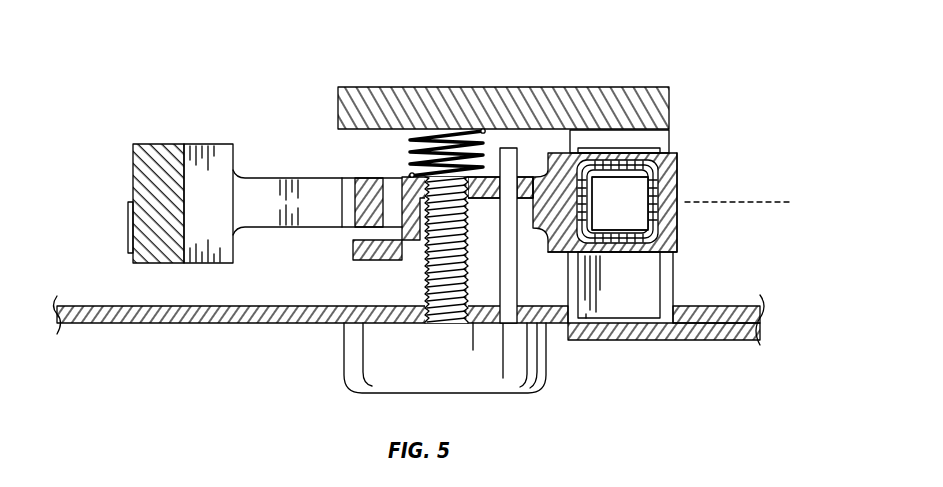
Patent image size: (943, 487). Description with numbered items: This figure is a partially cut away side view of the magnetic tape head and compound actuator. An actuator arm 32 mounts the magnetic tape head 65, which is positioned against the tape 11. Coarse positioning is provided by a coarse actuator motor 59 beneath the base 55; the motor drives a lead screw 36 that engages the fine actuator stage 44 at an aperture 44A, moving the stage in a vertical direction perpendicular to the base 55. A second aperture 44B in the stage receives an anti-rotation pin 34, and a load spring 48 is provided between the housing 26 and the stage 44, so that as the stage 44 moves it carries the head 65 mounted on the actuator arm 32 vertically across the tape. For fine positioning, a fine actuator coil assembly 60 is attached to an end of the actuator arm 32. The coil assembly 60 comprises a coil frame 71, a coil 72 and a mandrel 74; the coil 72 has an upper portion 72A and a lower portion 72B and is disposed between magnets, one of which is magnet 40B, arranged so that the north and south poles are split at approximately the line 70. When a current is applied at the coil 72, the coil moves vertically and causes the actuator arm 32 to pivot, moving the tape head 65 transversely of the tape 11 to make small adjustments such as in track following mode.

The tape 11 is at (130, 225).
The housing 26 is at (373, 87).
The actuator arm 32 is at (297, 174).
The anti-rotation pin 34 is at (505, 148).
The lead screw 36 is at (427, 275).
The magnet 40B is at (613, 147).
The fine actuator stage 44 is at (398, 198).
The aperture 44A is at (477, 190).
The aperture 44B is at (522, 176).
The load spring 48 is at (408, 150).
The base 55 is at (110, 323).
The coarse actuator motor 59 is at (345, 348).
The fine actuator coil assembly 60 is at (684, 172).
The magnetic tape head 65 is at (212, 144).
The line 70 is at (782, 200).
The coil frame 71 is at (678, 240).
The coil 72 is at (677, 157).
The upper portion 72A is at (635, 173).
The lower portion 72B is at (617, 255).
The mandrel 74 is at (620, 203).